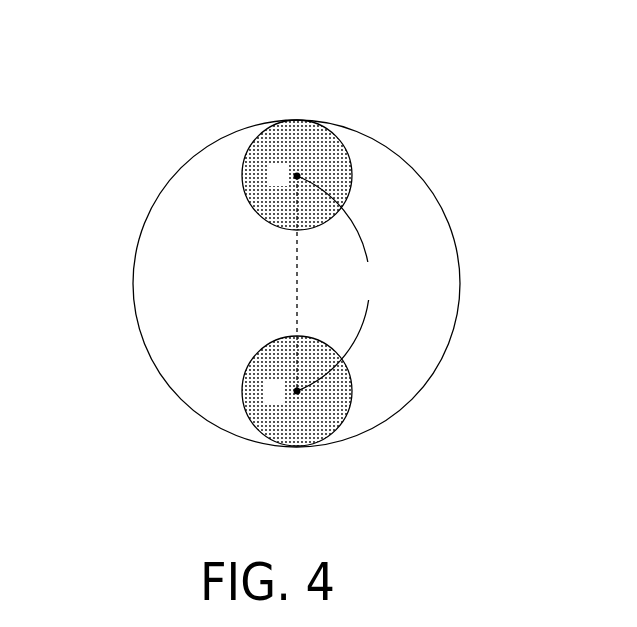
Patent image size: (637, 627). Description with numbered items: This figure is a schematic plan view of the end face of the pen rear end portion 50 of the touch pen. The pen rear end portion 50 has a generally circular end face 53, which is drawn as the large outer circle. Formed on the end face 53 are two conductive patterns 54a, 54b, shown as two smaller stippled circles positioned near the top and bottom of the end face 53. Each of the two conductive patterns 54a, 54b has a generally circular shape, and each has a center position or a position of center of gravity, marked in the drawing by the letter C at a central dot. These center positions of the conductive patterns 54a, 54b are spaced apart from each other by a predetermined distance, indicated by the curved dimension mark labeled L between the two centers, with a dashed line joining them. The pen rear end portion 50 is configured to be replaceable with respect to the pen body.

The pen rear end portion 50 is at (264, 288).
The end face 53 is at (165, 277).
The conductive pattern 54a is at (295, 142).
The conductive pattern 54b is at (298, 425).